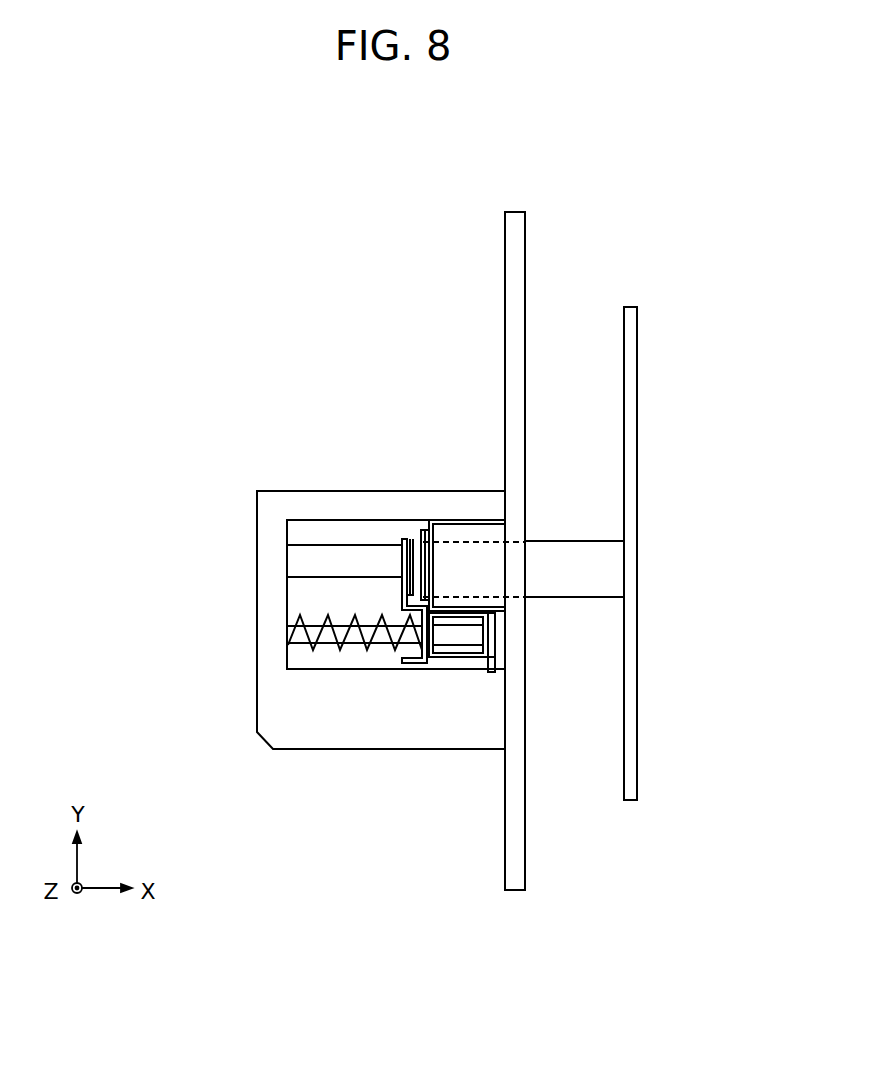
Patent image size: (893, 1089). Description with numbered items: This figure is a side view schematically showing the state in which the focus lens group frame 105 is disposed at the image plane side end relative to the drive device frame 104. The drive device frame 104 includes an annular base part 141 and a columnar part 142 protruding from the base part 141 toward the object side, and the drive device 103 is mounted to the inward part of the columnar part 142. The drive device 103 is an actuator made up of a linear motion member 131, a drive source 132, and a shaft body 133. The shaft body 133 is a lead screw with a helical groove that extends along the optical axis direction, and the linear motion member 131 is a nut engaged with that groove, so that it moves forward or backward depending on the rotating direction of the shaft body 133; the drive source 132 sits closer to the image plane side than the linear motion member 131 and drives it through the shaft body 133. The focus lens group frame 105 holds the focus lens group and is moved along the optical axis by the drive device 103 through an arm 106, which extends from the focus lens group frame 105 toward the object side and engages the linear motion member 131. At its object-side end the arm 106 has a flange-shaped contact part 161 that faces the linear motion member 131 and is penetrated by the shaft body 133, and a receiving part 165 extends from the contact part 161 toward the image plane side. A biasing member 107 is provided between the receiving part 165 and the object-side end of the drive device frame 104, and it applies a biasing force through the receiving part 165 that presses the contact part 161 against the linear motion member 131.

The drive device 103 is at (468, 525).
The drive device frame 104 is at (525, 842).
The focus lens group frame 105 is at (637, 384).
The arm 106 is at (574, 538).
The biasing member 107 is at (325, 628).
The linear motion member 131 is at (417, 532).
The drive source 132 is at (440, 525).
The shaft body 133 is at (308, 555).
The base part 141 is at (506, 812).
The columnar part 142 is at (290, 750).
The contact part 161 is at (404, 590).
The receiving part 165 is at (433, 658).